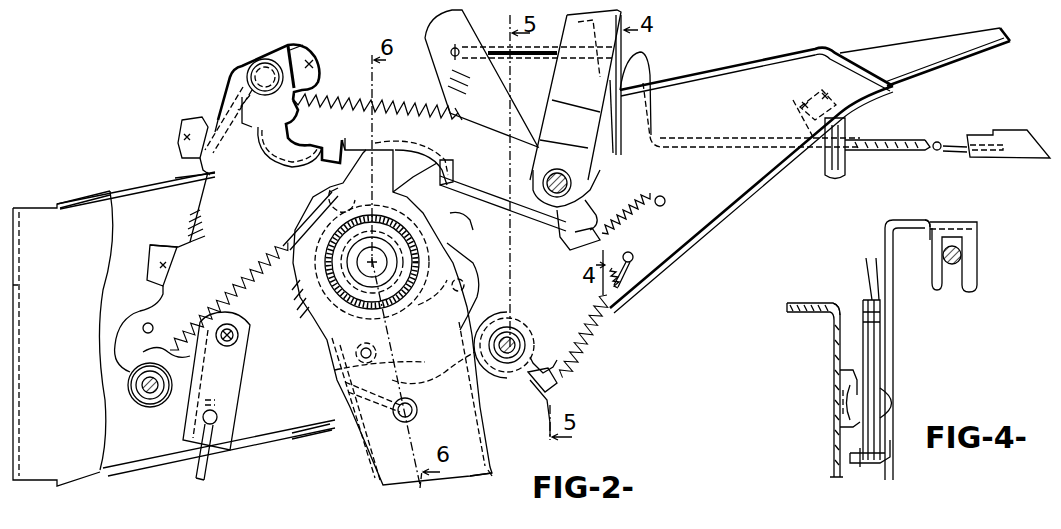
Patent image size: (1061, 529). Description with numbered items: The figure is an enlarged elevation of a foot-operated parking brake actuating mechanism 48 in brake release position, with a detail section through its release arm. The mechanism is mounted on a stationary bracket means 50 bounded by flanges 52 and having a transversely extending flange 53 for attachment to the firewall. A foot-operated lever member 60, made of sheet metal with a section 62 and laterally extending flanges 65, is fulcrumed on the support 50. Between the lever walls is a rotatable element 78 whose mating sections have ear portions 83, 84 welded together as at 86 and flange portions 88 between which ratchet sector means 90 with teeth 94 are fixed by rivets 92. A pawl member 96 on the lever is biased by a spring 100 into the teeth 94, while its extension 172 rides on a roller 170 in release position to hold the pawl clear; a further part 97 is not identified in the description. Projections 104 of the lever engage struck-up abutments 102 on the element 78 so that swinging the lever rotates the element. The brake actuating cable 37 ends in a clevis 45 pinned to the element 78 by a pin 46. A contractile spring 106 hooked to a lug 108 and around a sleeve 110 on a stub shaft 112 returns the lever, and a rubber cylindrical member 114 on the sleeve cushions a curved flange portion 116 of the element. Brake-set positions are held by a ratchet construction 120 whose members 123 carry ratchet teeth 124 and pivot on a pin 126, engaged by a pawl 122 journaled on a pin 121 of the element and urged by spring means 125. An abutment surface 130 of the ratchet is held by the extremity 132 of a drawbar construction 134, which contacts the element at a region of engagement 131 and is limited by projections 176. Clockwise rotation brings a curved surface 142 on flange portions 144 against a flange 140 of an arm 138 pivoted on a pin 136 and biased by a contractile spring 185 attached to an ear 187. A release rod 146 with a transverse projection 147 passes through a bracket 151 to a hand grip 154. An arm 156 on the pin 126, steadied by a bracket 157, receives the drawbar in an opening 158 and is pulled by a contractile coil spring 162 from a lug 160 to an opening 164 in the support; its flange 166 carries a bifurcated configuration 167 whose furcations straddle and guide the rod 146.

In FIG. 2, the brake actuating cable 37 is at (208, 476).
In FIG. 2, the clevis 45 is at (236, 391).
In FIG. 2, the pin 46 is at (240, 328).
In FIG. 2, the foot-operated brake actuating mechanism 48 is at (213, 76).
In FIG. 2, the bracket means 50 is at (811, 46).
In FIG. 4, the bracket means 50 is at (843, 312).
In FIG. 2, the flanges 52 is at (745, 62).
In FIG. 4, the flanges 52 is at (800, 305).
In FIG. 2, the transversely extending flange 53 is at (18, 231).
In FIG. 2, the lever member 60 is at (494, 449).
In FIG. 2, the lever section 62 is at (470, 476).
In FIG. 2, the laterally extending flanges 65 is at (378, 478).
In FIG. 2, the rotatable element 78 is at (248, 208).
In FIG. 2, the ear portion 83 is at (313, 38).
In FIG. 2, the ear portion 84 is at (152, 246).
In FIG. 2, the weld 86 is at (160, 265).
In FIG. 2, the flange portions 88 is at (466, 258).
In FIG. 2, the ratchet sector means 90 is at (335, 368).
In FIG. 2, the rivets 92 is at (355, 351).
In FIG. 2, the teeth 94 is at (470, 291).
In FIG. 2, the pawl member 96 is at (392, 410).
In FIG. 2, the guide 97 is at (345, 382).
In FIG. 2, the spring 100 is at (352, 430).
In FIG. 2, the struck projections 102 is at (408, 156).
In FIG. 2, the projections 104 is at (378, 146).
In FIG. 2, the contractile spring 106 is at (242, 268).
In FIG. 2, the lug 108 is at (312, 215).
In FIG. 2, the sleeve 110 is at (145, 408).
In FIG. 2, the stub shaft 112 is at (140, 381).
In FIG. 2, the cylindrical member 114 is at (136, 393).
In FIG. 2, the curved flange portion 116 is at (142, 352).
In FIG. 2, the ratchet construction 120 is at (358, 90).
In FIG. 2, the pin 121 is at (258, 67).
In FIG. 2, the pawl 122 is at (246, 98).
In FIG. 4, the members 123 is at (868, 268).
In FIG. 2, the ratchet teeth 124 is at (423, 100).
In FIG. 2, the spring means 125 is at (240, 83).
In FIG. 2, the pin 126 is at (572, 160).
In FIG. 4, the pin 126 is at (898, 396).
In FIG. 2, the abutment surfaces 130 is at (354, 197).
In FIG. 2, the region of engagement 131 is at (370, 214).
In FIG. 2, the extremity 132 is at (330, 188).
In FIG. 2, the drawbar construction 134 is at (472, 213).
In FIG. 2, the pin 136 is at (530, 335).
In FIG. 2, the arm 138 is at (497, 80).
In FIG. 2, the flange 140 is at (462, 178).
In FIG. 2, the curved surface 142 is at (366, 133).
In FIG. 2, the flange portions 144 is at (344, 142).
In FIG. 2, the rod 146 is at (937, 141).
In FIG. 4, the rod 146 is at (958, 263).
In FIG. 2, the transverse projection 147 is at (459, 48).
In FIG. 2, the bracket 151 is at (798, 105).
In FIG. 2, the hand grip 154 is at (1015, 140).
In FIG. 2, the arm 156 is at (645, 68).
In FIG. 4, the arm 156 is at (885, 235).
In FIG. 2, the bracket 157 is at (648, 106).
In FIG. 4, the bracket 157 is at (838, 350).
In FIG. 2, the opening 158 is at (575, 246).
In FIG. 2, the lug 160 is at (605, 210).
In FIG. 2, the contractile coil spring 162 is at (641, 232).
In FIG. 4, the contractile coil spring 162 is at (866, 470).
In FIG. 2, the opening 164 is at (666, 201).
In FIG. 4, the flange 166 is at (924, 210).
In FIG. 4, the bifurcated configuration 167 is at (990, 240).
In FIG. 2, the roller 170 is at (560, 372).
In FIG. 2, the extension 172 is at (435, 377).
In FIG. 2, the projections 176 is at (598, 190).
In FIG. 2, the contractile spring 185 is at (598, 346).
In FIG. 2, the ear 187 is at (548, 395).